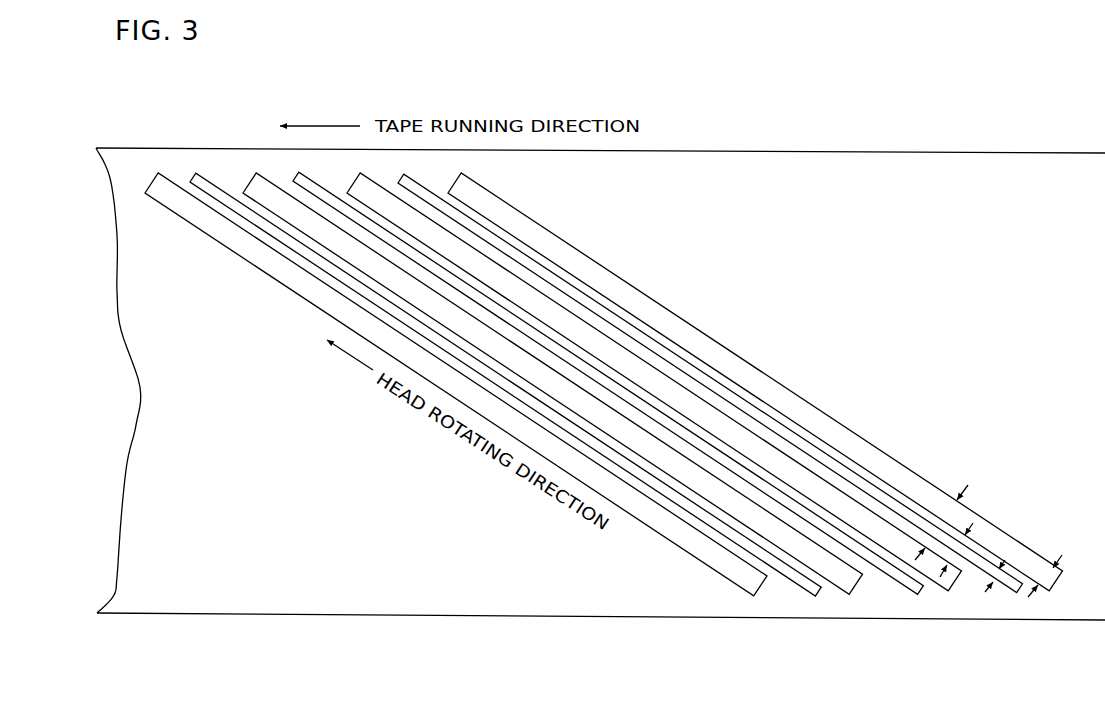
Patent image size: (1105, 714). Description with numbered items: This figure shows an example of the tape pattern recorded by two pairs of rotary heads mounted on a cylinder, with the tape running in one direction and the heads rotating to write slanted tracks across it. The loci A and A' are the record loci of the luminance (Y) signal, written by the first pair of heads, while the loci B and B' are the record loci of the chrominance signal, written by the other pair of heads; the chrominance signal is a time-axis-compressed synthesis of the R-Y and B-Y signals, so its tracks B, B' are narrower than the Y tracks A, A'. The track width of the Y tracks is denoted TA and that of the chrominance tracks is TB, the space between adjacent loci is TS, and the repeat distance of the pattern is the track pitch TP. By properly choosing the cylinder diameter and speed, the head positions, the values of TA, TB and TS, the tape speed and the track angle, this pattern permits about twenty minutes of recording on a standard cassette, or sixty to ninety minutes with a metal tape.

The record locus of the Y signal A is at (546, 377).
The record locus of the chrominance signal B is at (599, 377).
The record locus of the Y signal A' is at (644, 375).
The record locus of the chrominance signal B' is at (600, 375).
The track pitch TP is at (936, 528).
The space TS is at (962, 538).
The track width of the heads B1 and B1' TB is at (997, 577).
The track width of the heads A1 and A1' TA is at (1047, 577).